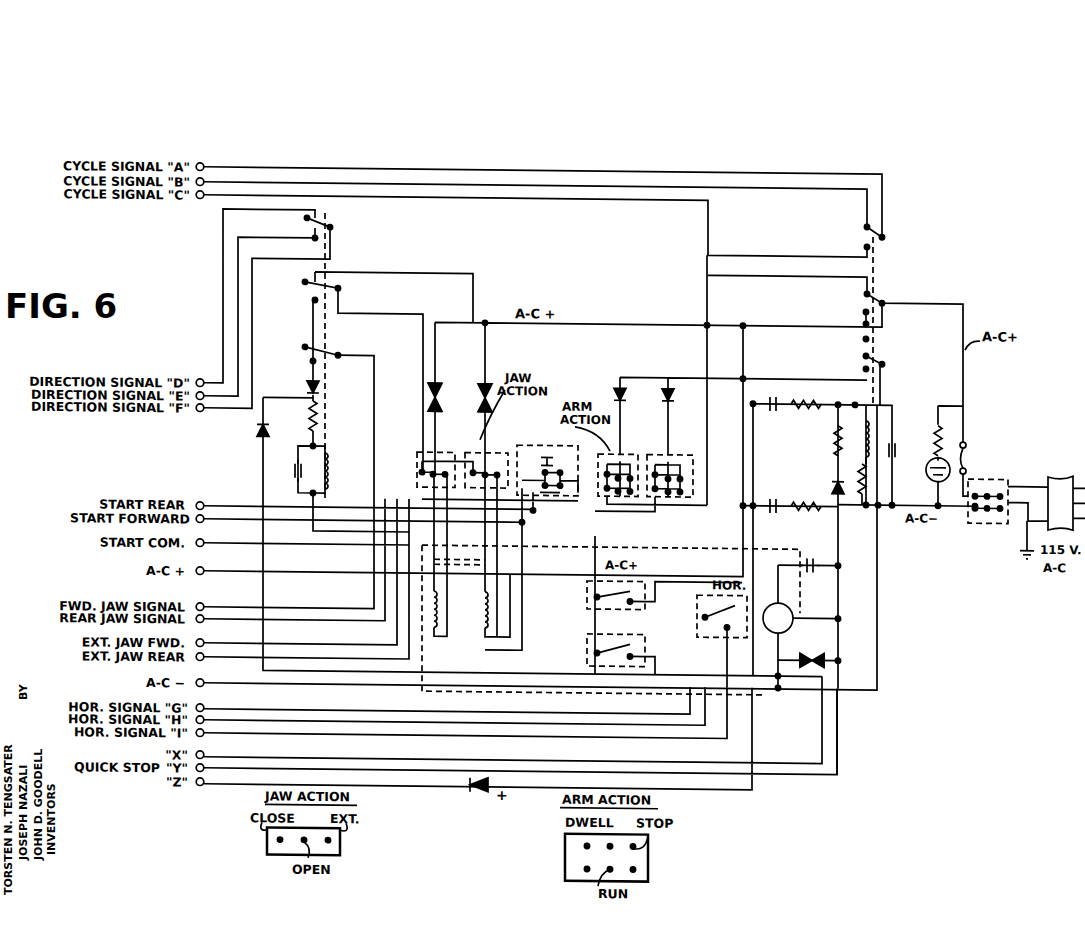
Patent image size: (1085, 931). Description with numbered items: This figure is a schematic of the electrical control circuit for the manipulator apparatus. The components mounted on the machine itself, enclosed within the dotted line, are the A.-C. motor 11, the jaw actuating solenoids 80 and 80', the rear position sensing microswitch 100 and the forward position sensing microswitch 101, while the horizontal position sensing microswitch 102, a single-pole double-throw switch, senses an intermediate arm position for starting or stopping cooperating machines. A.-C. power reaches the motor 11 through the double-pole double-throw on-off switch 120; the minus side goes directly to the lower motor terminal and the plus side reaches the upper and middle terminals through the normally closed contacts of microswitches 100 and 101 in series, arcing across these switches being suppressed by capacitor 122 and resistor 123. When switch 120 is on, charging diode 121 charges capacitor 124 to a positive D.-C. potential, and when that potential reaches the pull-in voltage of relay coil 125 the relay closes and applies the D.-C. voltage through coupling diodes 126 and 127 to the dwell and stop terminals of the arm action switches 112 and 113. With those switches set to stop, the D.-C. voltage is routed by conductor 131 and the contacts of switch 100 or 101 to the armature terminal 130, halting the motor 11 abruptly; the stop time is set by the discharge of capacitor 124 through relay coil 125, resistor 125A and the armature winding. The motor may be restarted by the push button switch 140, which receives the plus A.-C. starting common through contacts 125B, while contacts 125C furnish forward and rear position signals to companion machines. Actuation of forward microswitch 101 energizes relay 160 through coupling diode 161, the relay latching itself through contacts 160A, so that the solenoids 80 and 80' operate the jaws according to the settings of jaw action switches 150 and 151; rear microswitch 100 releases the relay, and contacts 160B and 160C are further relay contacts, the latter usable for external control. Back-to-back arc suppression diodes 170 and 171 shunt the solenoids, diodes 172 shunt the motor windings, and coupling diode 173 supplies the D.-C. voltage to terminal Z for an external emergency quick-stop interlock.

The A.-C. motor 11 is at (770, 592).
The jaw actuating solenoid 80 is at (415, 556).
The jaw actuating solenoid 80' is at (472, 555).
The rear position sensing microswitch 100 is at (583, 592).
The forward position sensing microswitch 101 is at (583, 635).
The horizontal position sensing microswitch 102 is at (705, 593).
The arm action switch 112 is at (650, 450).
The arm action switch 113 is at (688, 434).
The on-off switch 120 is at (975, 520).
The charging diode 121 is at (830, 470).
The capacitor 122 is at (800, 515).
The resistor 123 is at (780, 490).
The capacitor 124 is at (900, 440).
The relay coil 125 is at (883, 463).
The resistor 125A is at (860, 350).
The contacts of relay 125 125B is at (860, 288).
The contacts of relay 125 125C is at (862, 222).
The coupling diode 126 is at (642, 395).
The coupling diode 127 is at (690, 395).
The armature terminal 130 is at (818, 600).
The conductor 131 is at (812, 785).
The push button switch 140 is at (540, 430).
The jaw action switch 150 is at (458, 438).
The jaw action switch 151 is at (500, 448).
The relay 160 is at (328, 462).
The contacts of relay 160 160A is at (320, 356).
The contacts of relay 160 160B is at (336, 288).
The contacts of relay 160 160C is at (332, 220).
The coupling diode 161 is at (255, 430).
The arc suppression diodes 170 is at (450, 378).
The arc suppression diodes 171 is at (500, 375).
The arc suppression diodes 172 is at (830, 635).
The coupling diode 173 is at (478, 795).